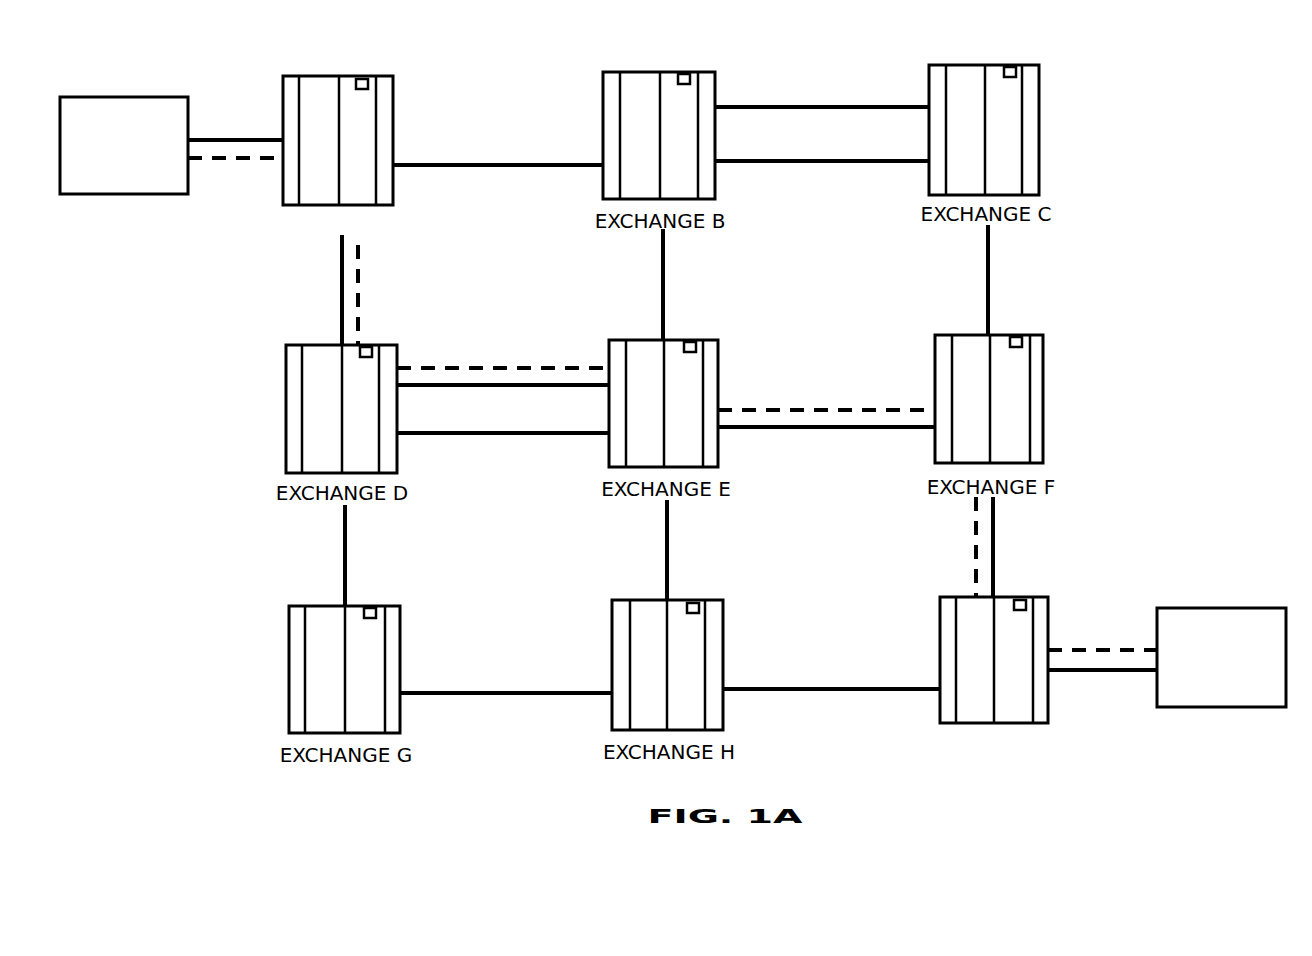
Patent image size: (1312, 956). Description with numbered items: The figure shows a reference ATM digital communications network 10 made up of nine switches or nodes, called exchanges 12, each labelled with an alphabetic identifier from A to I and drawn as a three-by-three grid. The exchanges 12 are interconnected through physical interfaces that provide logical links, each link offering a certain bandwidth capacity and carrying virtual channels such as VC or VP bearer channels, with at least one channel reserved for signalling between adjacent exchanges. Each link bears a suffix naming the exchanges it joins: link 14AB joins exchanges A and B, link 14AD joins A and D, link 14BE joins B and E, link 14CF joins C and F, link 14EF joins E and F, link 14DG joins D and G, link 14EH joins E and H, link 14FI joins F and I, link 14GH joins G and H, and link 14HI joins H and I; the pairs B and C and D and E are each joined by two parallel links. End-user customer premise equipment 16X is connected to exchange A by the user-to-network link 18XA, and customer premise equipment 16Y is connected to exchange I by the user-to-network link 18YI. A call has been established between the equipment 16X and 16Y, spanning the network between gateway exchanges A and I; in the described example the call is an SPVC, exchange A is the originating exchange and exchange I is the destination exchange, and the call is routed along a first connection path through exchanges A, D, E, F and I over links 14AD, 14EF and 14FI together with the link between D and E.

The ATM digital communications network 10 is at (893, 42).
The exchange 12 is at (350, 76).
The link 14AB is at (477, 165).
The link 14AD is at (340, 284).
The link 14BE is at (665, 286).
The link 14CF is at (990, 283).
The link 14EF is at (868, 428).
The link 14DG is at (347, 546).
The link 14EH is at (668, 544).
The link 14FI is at (995, 537).
The link 14GH is at (478, 693).
The link 14HI is at (800, 689).
The end-user customer premise equipment 16X is at (147, 97).
The end-user customer premise equipment 16Y is at (1195, 608).
The user-to-network link 18XA is at (237, 140).
The user-to-network link 18YI is at (1100, 672).